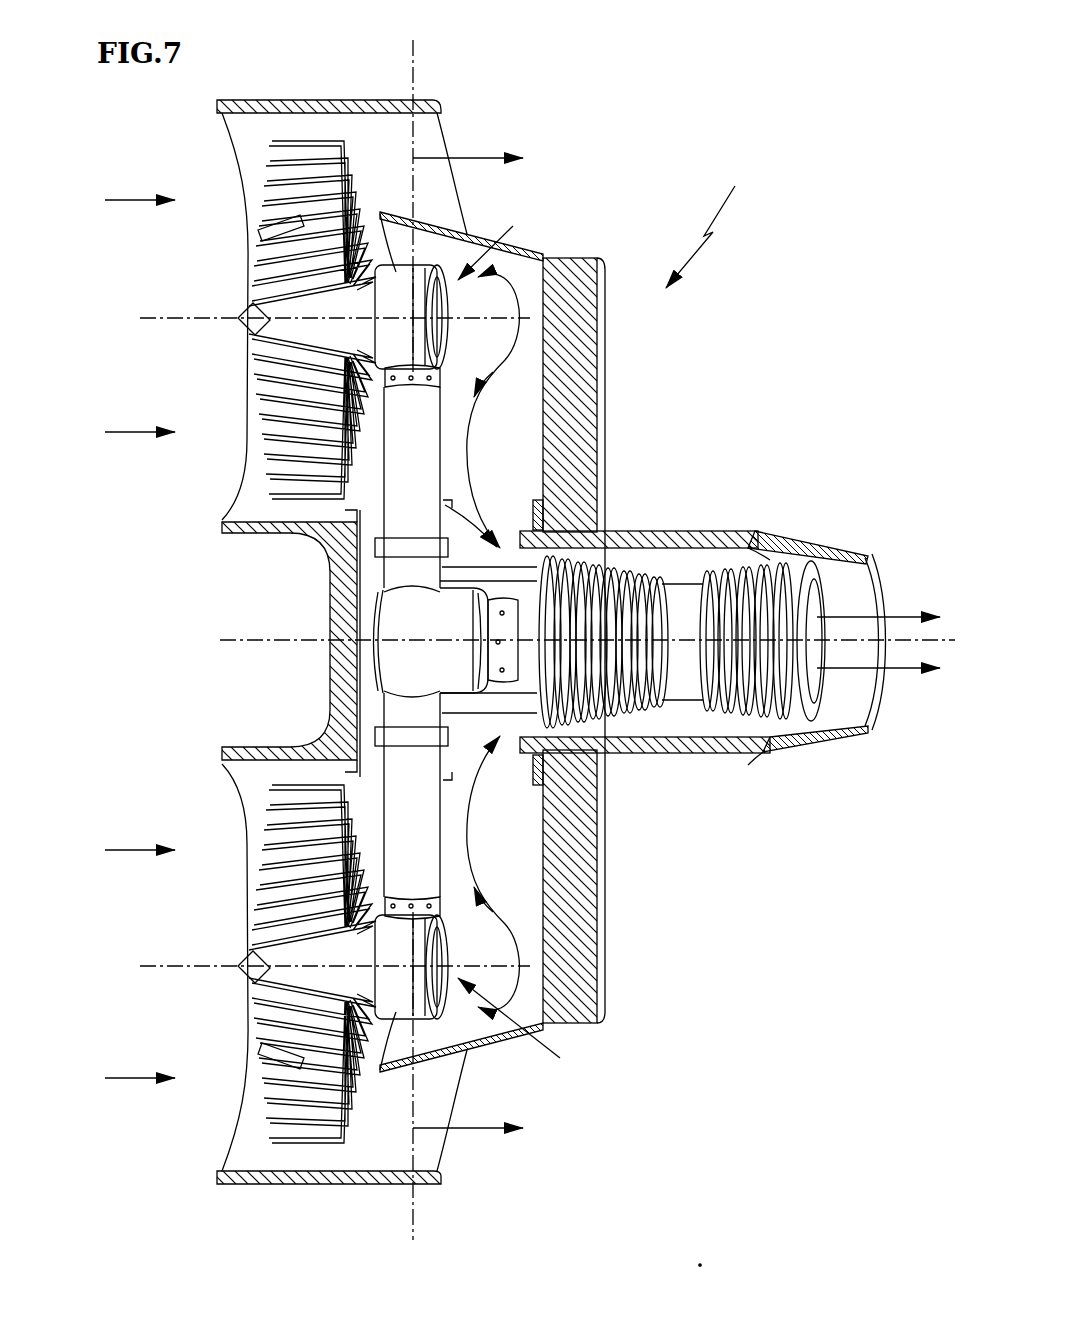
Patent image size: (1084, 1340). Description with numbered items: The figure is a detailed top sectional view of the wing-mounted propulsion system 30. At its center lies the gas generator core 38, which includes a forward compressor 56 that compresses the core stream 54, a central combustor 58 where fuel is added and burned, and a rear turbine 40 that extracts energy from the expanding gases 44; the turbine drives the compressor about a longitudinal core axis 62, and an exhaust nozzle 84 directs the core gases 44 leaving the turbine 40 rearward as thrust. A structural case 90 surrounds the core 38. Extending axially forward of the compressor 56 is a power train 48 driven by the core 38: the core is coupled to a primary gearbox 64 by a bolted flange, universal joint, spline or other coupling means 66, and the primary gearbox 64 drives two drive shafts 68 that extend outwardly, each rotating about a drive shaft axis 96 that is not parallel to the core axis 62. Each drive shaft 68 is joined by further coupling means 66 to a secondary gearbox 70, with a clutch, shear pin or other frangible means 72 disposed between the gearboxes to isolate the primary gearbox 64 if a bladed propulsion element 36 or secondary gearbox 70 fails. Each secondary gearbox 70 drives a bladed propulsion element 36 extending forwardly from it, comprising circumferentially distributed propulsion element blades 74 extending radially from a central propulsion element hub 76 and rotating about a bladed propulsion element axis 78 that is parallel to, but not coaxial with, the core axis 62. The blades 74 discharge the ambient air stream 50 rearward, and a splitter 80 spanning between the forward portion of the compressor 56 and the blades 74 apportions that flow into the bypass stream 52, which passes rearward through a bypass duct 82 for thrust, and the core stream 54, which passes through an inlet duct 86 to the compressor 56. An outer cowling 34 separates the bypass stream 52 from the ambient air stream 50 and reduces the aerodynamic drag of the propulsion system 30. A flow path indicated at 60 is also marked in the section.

The propulsion system 30 is at (712, 221).
The outer cowling 34 is at (310, 100).
The bladed propulsion element 36 is at (255, 152).
The gas generator core 38 is at (905, 778).
The turbine 40 is at (813, 522).
The expanding gases 44 is at (895, 617).
The power train 48 is at (524, 641).
The ambient air stream 50 is at (129, 200).
The bypass stream 52 is at (488, 154).
The core stream 54 is at (482, 378).
The compressor 56 is at (522, 522).
The combustor 58 is at (682, 600).
The flow path 60 is at (495, 556).
The core axis 62 is at (240, 640).
The primary gearbox 64 is at (430, 631).
The coupling means 66 is at (426, 392).
The drive shaft 68 is at (430, 480).
The secondary gearbox 70 is at (440, 336).
The frangible means 72 is at (376, 546).
The propulsion element blade 74 is at (262, 236).
The propulsion element hub 76 is at (252, 326).
The bladed propulsion element axis 78 is at (172, 318).
The splitter 80 is at (585, 406).
The bypass duct 82 is at (400, 150).
The exhaust nozzle 84 is at (822, 554).
The inlet duct 86 is at (516, 446).
The structural case 90 is at (735, 758).
The drive shaft axis 96 is at (414, 62).